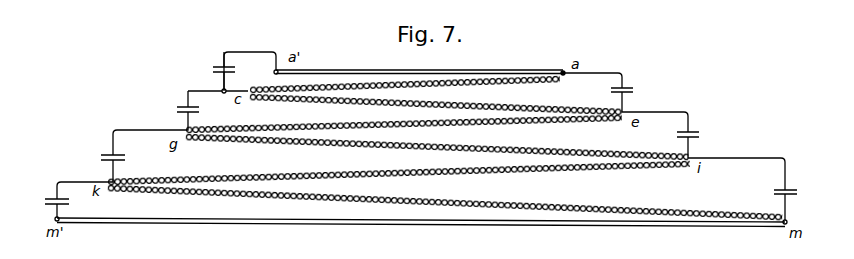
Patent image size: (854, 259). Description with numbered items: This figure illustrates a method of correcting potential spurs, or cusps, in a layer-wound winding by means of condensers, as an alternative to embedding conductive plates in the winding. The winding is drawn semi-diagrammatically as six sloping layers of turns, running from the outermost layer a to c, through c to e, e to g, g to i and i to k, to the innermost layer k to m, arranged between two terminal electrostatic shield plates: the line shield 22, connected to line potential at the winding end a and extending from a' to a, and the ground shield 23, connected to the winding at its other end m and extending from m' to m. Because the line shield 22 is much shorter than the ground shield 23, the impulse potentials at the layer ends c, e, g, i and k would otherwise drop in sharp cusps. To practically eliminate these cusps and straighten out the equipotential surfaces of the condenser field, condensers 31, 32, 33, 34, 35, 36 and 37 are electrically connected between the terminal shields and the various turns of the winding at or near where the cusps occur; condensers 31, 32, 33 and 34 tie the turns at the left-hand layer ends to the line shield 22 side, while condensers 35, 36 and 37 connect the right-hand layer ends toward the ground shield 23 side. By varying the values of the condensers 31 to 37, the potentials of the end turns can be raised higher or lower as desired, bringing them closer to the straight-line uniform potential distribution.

The line shield 22 is at (480, 69).
The ground shield 23 is at (450, 227).
The condenser 31 is at (213, 69).
The condenser 32 is at (180, 109).
The condenser 33 is at (101, 157).
The condenser 34 is at (47, 198).
The condenser 35 is at (792, 189).
The condenser 36 is at (700, 134).
The condenser 37 is at (634, 90).